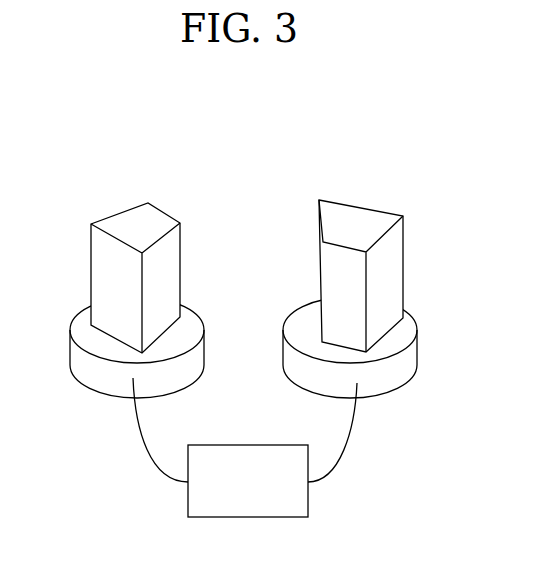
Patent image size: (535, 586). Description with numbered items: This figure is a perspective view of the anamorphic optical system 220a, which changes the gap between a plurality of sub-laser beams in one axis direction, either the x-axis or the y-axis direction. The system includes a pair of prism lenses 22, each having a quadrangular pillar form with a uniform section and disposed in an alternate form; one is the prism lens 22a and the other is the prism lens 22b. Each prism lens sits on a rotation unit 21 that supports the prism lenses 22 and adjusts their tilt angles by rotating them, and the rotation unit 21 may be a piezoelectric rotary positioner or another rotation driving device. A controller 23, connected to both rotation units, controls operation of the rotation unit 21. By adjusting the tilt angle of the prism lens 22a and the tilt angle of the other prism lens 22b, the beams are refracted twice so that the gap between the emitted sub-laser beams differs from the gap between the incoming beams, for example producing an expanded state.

The anamorphic optical system 220a is at (357, 123).
The rotation unit 21 is at (97, 376).
The pair of prism lenses 22 is at (192, 167).
The prism lens 22a is at (167, 273).
The another prism lens 22b is at (327, 262).
The controller 23 is at (308, 498).